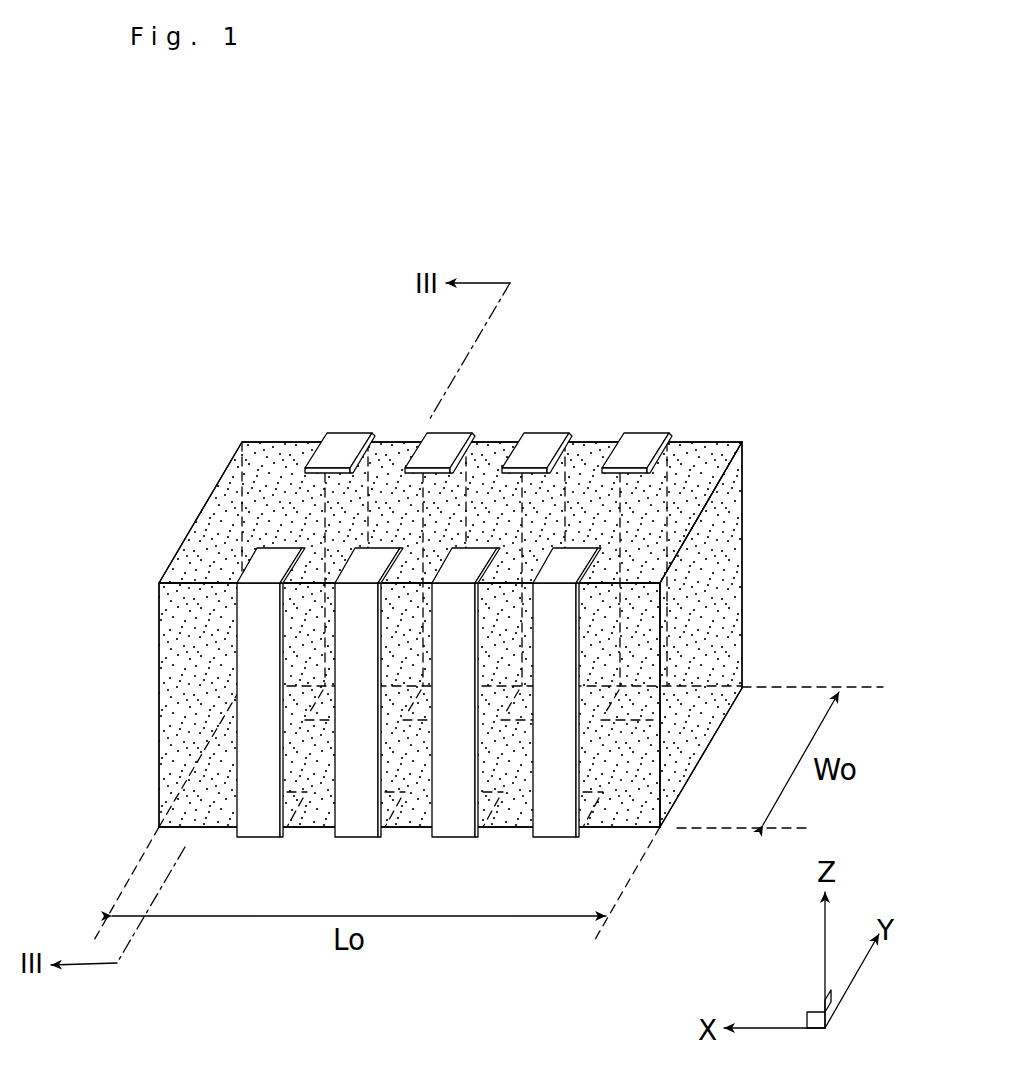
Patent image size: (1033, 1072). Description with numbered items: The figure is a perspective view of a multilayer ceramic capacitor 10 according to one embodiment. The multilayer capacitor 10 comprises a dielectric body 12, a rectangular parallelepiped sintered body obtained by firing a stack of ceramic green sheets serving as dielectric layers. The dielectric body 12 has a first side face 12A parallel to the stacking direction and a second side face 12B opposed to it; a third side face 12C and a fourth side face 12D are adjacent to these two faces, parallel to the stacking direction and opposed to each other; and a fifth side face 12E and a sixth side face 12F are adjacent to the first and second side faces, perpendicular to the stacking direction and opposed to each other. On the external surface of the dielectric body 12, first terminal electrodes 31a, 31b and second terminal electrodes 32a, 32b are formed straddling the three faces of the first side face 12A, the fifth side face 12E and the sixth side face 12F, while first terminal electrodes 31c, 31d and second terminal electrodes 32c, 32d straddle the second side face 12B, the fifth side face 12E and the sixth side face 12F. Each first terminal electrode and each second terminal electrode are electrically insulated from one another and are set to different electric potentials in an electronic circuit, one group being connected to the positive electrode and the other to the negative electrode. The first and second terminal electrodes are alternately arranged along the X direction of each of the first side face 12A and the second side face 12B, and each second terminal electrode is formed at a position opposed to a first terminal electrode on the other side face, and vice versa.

The multilayer ceramic capacitor 10 is at (358, 274).
The dielectric body 12 is at (199, 499).
The first side face 12A is at (278, 440).
The second side face 12B is at (185, 741).
The third side face 12C is at (713, 595).
The fourth side face 12D is at (158, 687).
The fifth side face 12E is at (703, 760).
The sixth side face 12F is at (260, 497).
The first terminal electrode 31a is at (352, 433).
The first terminal electrode 31b is at (548, 433).
The first terminal electrode 31c is at (553, 837).
The first terminal electrode 31d is at (355, 837).
The second terminal electrode 32a is at (447, 433).
The second terminal electrode 32b is at (648, 433).
The second terminal electrode 32c is at (453, 837).
The second terminal electrode 32d is at (257, 837).